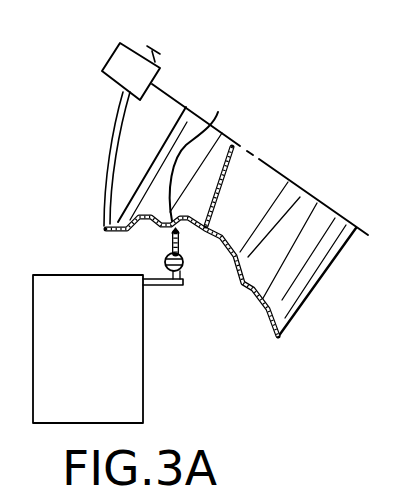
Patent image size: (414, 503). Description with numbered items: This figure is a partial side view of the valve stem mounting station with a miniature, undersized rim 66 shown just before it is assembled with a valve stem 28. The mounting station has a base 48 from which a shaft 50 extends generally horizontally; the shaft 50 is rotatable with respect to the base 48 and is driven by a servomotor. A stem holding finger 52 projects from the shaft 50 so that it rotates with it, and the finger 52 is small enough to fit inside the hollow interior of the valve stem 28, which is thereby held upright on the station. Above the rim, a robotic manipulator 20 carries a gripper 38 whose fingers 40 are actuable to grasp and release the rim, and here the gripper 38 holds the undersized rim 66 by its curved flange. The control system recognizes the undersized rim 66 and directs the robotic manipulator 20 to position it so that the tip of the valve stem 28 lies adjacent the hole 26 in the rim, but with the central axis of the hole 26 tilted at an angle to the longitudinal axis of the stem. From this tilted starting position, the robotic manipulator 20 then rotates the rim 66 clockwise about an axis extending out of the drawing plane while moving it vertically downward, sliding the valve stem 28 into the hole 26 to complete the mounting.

The robotic manipulator 20 is at (156, 71).
The hole 26 is at (211, 150).
The valve stem 28 is at (182, 254).
The gripper 38 is at (114, 94).
The fingers 40 is at (104, 156).
The base 48 is at (112, 346).
The shaft 50 is at (158, 285).
The stem holding finger 52 is at (163, 272).
The undersized rim 66 is at (291, 181).